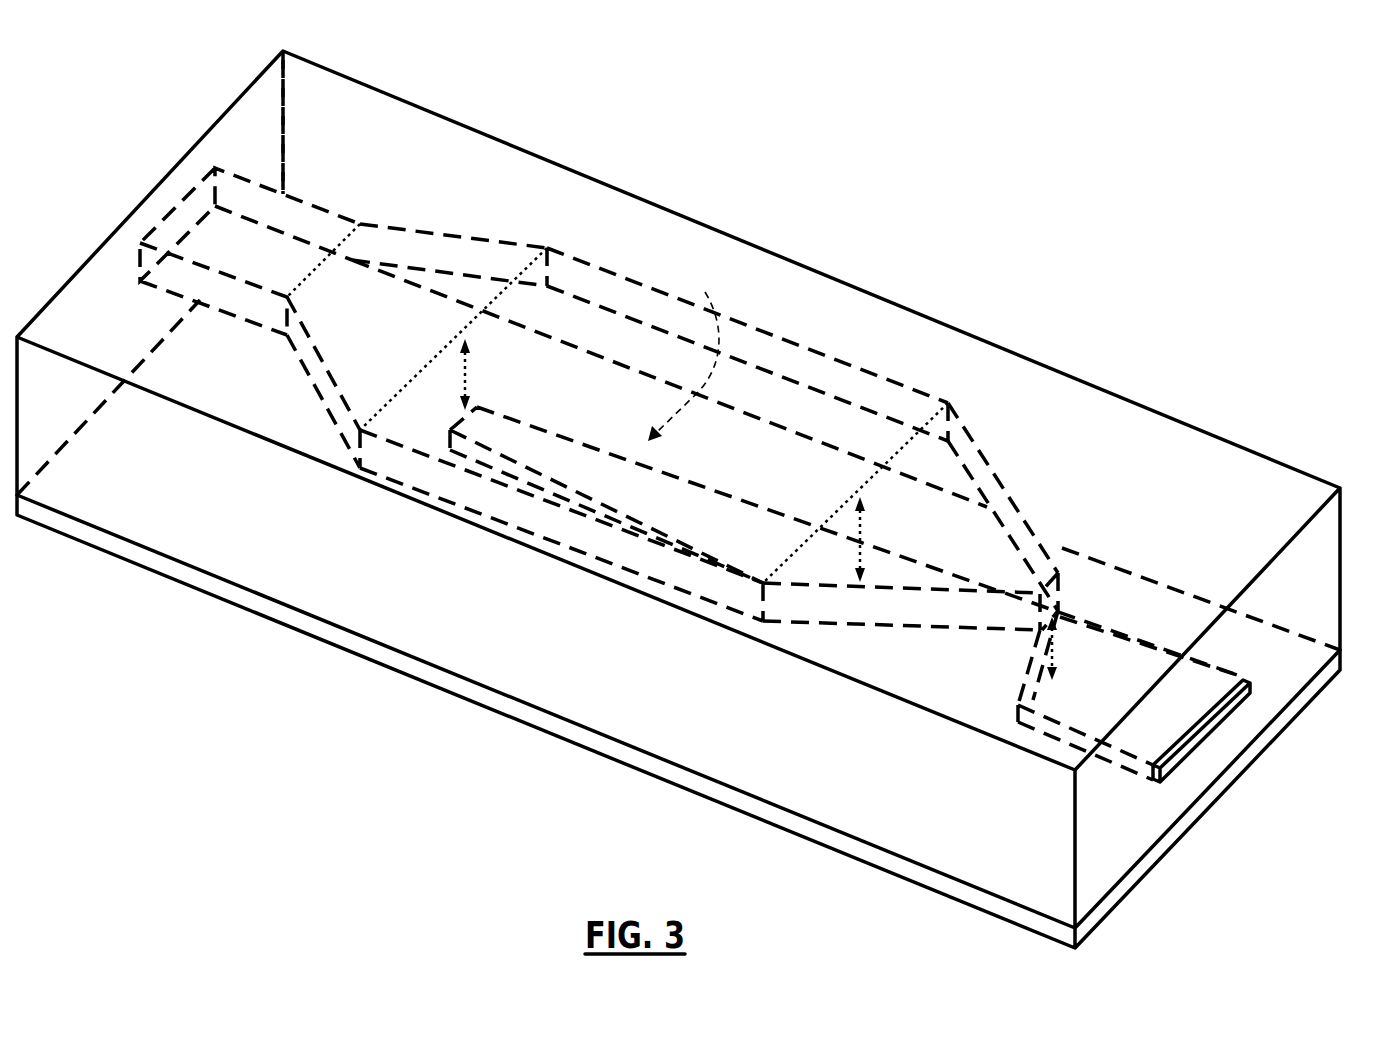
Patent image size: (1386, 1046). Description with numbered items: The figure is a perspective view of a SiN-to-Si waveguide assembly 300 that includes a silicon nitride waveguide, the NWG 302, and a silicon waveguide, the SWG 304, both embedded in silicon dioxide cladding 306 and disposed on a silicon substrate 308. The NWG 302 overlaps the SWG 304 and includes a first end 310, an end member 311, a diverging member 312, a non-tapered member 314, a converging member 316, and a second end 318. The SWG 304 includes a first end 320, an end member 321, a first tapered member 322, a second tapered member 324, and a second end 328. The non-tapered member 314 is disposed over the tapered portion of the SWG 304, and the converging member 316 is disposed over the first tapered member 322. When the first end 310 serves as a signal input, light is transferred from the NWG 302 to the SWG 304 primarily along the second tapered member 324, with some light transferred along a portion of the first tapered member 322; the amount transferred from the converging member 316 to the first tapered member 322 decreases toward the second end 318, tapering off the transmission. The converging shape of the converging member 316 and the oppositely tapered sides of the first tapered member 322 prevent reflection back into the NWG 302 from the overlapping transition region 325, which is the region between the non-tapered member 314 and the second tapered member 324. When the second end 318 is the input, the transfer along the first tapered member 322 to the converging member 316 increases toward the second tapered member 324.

The SiN-to-Si waveguide assembly 300 is at (1107, 205).
The NWG 302 is at (215, 165).
The SWG 304 is at (1240, 676).
The SiO2 cladding 306 is at (1155, 412).
The substrate 308 is at (1160, 857).
The first end 310 is at (160, 223).
The end member 311 is at (338, 214).
The diverging member 312 is at (452, 232).
The non-tapered member 314 is at (860, 368).
The converging member 316 is at (993, 467).
The second end 318 is at (1063, 573).
The first end 320 is at (1210, 728).
The end member 321 is at (1147, 647).
The first tapered member 322 is at (927, 575).
The second tapered member 324 is at (703, 483).
The overlapping transition region 325 is at (700, 284).
The second end 328 is at (450, 425).